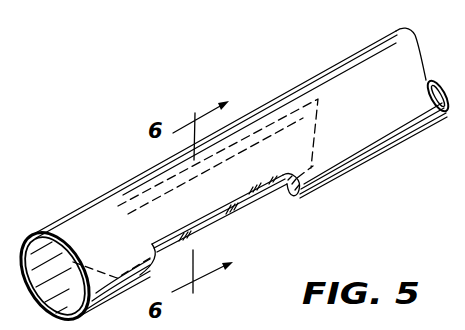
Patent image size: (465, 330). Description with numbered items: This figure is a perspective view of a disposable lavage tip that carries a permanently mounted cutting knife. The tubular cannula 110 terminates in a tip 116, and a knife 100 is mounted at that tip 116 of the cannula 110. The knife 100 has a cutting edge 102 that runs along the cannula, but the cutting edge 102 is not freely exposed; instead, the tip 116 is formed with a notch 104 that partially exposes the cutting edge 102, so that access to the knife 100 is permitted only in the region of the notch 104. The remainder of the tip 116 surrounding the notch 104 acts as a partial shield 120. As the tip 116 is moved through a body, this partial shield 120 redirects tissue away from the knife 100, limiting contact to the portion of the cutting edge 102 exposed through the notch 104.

The knife 100 is at (222, 222).
The cutting edge 102 is at (174, 252).
The notch 104 is at (289, 204).
The cannula 110 is at (275, 88).
The tip 116 is at (131, 168).
The partial shield 120 is at (122, 230).